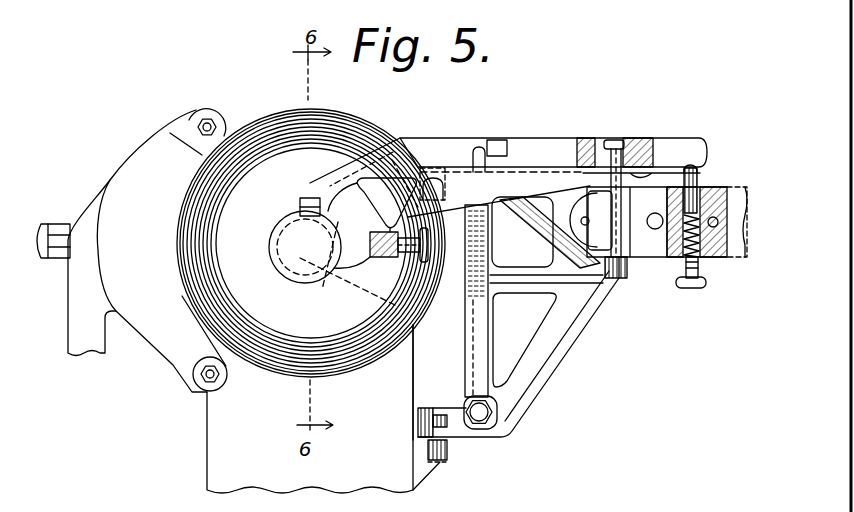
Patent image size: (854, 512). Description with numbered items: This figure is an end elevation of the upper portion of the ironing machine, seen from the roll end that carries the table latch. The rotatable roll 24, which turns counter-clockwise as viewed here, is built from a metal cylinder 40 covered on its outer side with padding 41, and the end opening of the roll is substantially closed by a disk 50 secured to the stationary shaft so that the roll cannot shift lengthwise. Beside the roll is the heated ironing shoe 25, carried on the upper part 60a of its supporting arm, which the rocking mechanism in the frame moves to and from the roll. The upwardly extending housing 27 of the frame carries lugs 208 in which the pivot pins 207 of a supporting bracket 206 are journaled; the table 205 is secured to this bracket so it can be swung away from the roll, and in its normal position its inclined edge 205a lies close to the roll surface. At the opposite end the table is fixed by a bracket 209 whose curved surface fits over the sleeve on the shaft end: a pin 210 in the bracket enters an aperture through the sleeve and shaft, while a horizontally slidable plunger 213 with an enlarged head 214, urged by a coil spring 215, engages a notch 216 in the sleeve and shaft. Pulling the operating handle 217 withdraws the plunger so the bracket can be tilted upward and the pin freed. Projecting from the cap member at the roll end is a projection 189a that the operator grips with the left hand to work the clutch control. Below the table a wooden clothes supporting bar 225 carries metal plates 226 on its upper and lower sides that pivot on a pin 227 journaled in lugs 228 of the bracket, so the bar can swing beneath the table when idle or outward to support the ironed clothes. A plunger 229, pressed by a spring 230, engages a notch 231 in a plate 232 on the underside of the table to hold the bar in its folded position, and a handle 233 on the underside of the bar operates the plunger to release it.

The rotatable roll 24 is at (251, 103).
The heated ironing shoe 25 is at (148, 155).
The upwardly extending housing 27 is at (206, 450).
The metal cylinder 40 is at (293, 348).
The padding 41 is at (270, 365).
The disk 50 is at (229, 257).
The upper part of supporting arm 60a is at (87, 341).
The projection 189a is at (345, 202).
The table 205 is at (536, 135).
The inclined edge 205a is at (419, 128).
The supporting bracket 206 is at (535, 392).
The pivot pins 207 is at (499, 252).
The lugs 208 is at (488, 470).
The bracket 209 is at (355, 120).
The pin 210 is at (278, 224).
The horizontally slidable plunger 213 is at (432, 262).
The enlarged head 214 is at (324, 290).
The coil spring 215 is at (355, 281).
The notch 216 is at (291, 252).
The operating handle 217 is at (441, 262).
The clothes supporting bar 225 is at (712, 266).
The metal plates 226 is at (719, 187).
The pin 227 is at (640, 250).
The lugs 228 is at (594, 140).
The notch 231 is at (662, 147).
The plate 232 is at (684, 166).
The plunger 229 is at (700, 167).
The spring 230 is at (700, 260).
The handle 233 is at (692, 300).